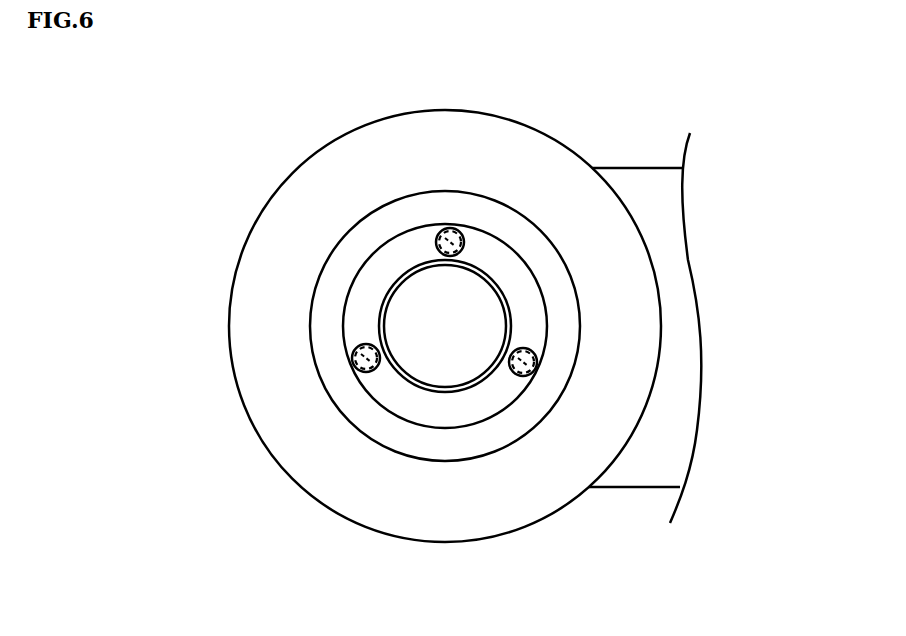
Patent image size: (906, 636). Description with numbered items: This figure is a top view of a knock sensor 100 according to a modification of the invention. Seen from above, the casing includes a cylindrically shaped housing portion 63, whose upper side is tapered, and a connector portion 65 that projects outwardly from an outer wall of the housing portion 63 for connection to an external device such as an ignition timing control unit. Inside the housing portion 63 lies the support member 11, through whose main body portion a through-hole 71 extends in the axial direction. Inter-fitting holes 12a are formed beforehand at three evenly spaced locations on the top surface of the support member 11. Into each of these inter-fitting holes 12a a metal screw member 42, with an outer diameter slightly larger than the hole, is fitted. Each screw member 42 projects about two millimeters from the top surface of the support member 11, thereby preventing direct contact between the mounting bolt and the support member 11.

The knock sensor 100 is at (586, 130).
The housing portion 63 is at (448, 140).
The connector portion 65 is at (643, 190).
The support member 11 is at (377, 260).
The through-hole 71 is at (390, 297).
The screw members 42 is at (440, 243).
The inter-fitting holes 12a is at (462, 227).